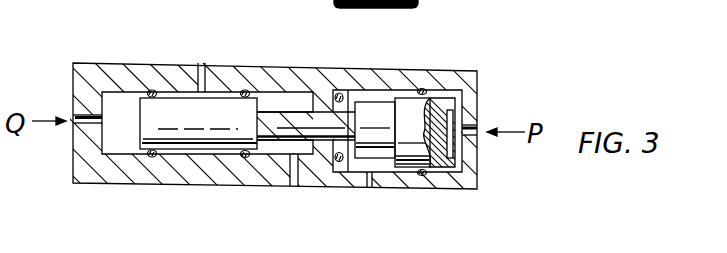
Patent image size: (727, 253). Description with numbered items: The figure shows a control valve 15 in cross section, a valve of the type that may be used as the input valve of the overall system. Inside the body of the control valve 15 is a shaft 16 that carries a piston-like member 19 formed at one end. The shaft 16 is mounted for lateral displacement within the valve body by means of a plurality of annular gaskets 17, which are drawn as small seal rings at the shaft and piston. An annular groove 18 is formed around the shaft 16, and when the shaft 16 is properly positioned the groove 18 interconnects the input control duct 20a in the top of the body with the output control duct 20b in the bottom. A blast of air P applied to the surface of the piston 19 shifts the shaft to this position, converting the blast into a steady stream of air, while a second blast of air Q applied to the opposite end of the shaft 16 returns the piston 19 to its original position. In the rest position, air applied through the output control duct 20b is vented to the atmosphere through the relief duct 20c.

The control valve 15 is at (463, 78).
The shaft 16 is at (205, 127).
The annular gaskets 17 is at (243, 91).
The annular groove 18 is at (312, 112).
The piston-like member 19 is at (407, 158).
The input control duct 20a is at (201, 56).
The output control duct 20b is at (295, 186).
The relief duct 20c is at (368, 189).